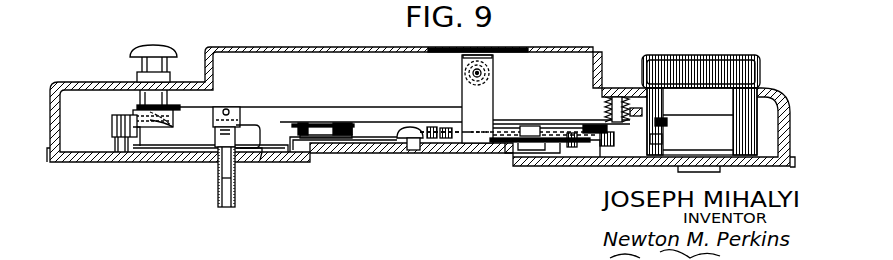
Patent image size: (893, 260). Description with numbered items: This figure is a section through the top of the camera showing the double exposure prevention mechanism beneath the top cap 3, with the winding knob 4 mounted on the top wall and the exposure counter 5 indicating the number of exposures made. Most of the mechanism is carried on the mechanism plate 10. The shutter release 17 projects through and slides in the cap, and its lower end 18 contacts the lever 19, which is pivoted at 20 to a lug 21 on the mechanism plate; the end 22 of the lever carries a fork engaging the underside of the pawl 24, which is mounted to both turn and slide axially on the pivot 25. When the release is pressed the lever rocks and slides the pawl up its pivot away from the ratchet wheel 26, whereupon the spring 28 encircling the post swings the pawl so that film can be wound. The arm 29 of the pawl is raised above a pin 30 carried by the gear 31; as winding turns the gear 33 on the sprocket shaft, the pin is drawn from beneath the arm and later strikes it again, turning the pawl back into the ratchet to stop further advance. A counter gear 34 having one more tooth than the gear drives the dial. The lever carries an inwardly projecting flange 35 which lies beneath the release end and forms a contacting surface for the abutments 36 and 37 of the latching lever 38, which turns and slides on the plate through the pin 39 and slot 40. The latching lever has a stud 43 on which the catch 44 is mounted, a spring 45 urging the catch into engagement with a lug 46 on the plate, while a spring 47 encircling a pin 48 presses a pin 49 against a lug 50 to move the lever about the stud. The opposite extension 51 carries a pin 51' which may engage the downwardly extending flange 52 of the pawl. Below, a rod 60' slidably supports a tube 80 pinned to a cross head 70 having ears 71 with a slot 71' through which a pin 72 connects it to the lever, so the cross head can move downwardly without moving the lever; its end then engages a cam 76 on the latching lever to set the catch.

The top cap 3 is at (52, 80).
The winding knob 4 is at (715, 56).
The exposure counter 5 is at (508, 50).
The mechanism plate 10 is at (292, 160).
The shutter release 17 is at (152, 46).
The lower end of release 18 is at (140, 105).
The lever 19 is at (370, 107).
The pivot 20 is at (468, 75).
The lug 21 is at (492, 82).
The end of lever 22 is at (600, 150).
The pawl 24 is at (600, 120).
The pivot 25 is at (626, 97).
The ratchet wheel 26 is at (667, 126).
The spring 28 is at (608, 97).
The arm of pawl 29 is at (548, 132).
The pin 30 is at (580, 135).
The gear 31 is at (530, 154).
The gear 33 is at (585, 144).
The gear 34 is at (445, 138).
The flange 35 is at (172, 105).
The abutment 36 is at (140, 128).
The abutment 37 is at (172, 128).
The latching lever 38 is at (378, 142).
The pin 39 is at (413, 141).
The slot 40 is at (433, 140).
The stud 43 is at (114, 122).
The catch 44 is at (127, 138).
The spring 45 is at (125, 112).
The lug 46 is at (116, 138).
The spring 47 is at (312, 141).
The pin 48 is at (341, 123).
The pin 49 is at (301, 123).
The lug 50 is at (345, 138).
The extension 51 is at (535, 163).
The pin 51' is at (597, 162).
The flange 52 is at (662, 138).
The rod 60' is at (245, 213).
The cross head 70 is at (245, 152).
The ear 71 is at (239, 104).
The slot 71' is at (245, 77).
The pin 72 is at (226, 109).
The cam 76 is at (252, 126).
The tube 80 is at (220, 200).